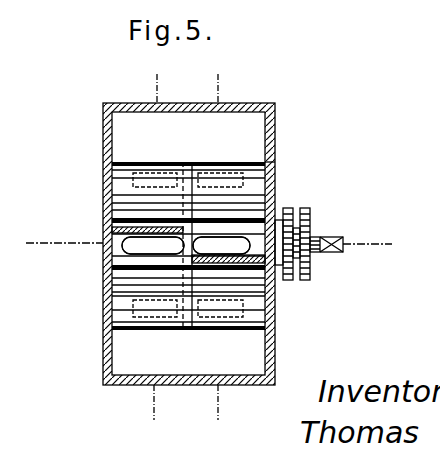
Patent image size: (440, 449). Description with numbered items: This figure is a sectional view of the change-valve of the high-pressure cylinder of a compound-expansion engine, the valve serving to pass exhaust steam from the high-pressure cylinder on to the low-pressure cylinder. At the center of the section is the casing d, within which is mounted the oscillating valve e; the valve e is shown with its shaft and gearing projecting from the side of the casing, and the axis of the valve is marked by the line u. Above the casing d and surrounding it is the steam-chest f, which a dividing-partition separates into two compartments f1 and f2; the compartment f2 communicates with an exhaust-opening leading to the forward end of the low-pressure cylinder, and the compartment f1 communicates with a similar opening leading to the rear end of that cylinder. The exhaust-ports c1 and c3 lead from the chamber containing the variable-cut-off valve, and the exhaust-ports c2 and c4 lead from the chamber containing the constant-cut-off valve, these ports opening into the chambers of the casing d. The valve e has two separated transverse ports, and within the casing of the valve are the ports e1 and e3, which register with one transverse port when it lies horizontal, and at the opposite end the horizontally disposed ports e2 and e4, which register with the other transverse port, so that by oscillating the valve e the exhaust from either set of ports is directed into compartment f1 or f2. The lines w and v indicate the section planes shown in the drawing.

The section line w- w is at (153, 249).
The section line v- v is at (216, 249).
The exhaust-port c4 is at (160, 165).
The compartment f2 is at (188, 227).
The exhaust-port c3 is at (232, 165).
The steam-chest f is at (276, 163).
The axis u- u is at (52, 241).
The port e2 is at (153, 245).
The port e4 is at (153, 245).
The port e1 is at (221, 245).
The port e3 is at (221, 245).
The valve e is at (321, 253).
The casing d is at (140, 284).
The exhaust-port c2 is at (148, 330).
The compartment f1 is at (188, 334).
The exhaust-port c1 is at (222, 330).